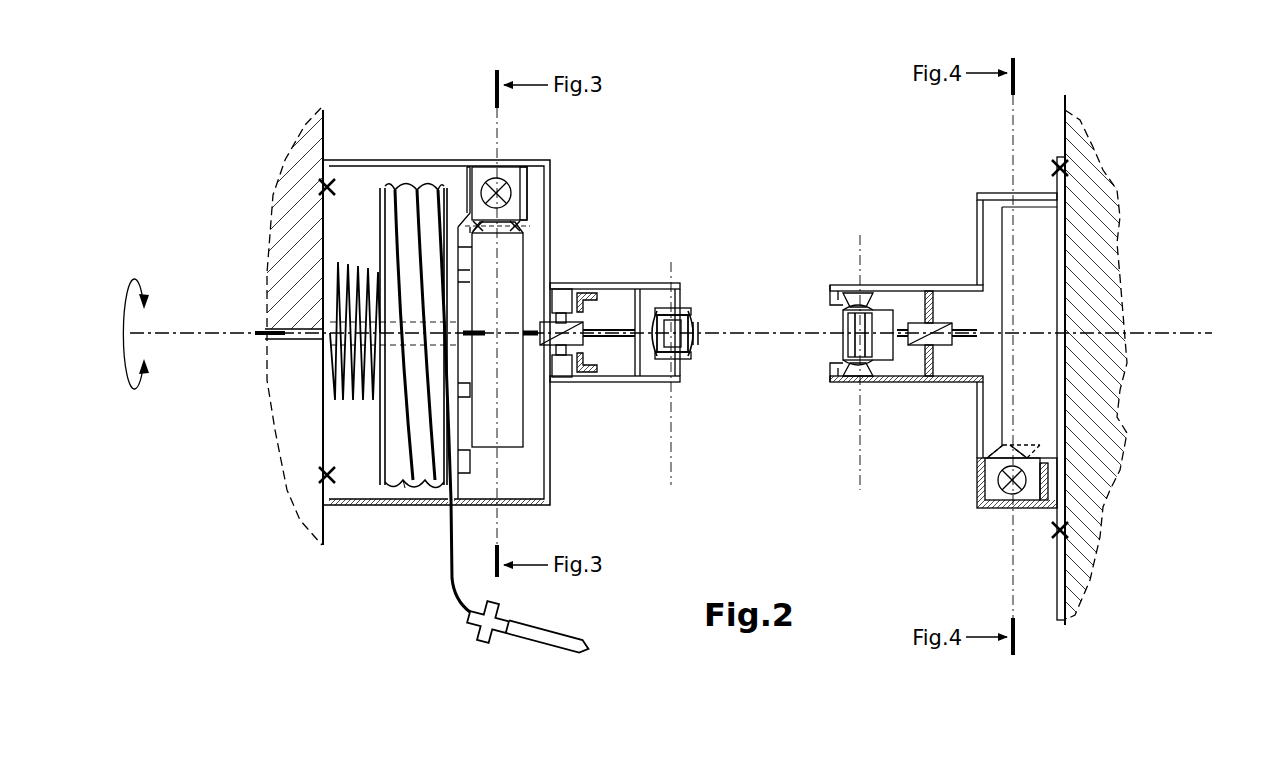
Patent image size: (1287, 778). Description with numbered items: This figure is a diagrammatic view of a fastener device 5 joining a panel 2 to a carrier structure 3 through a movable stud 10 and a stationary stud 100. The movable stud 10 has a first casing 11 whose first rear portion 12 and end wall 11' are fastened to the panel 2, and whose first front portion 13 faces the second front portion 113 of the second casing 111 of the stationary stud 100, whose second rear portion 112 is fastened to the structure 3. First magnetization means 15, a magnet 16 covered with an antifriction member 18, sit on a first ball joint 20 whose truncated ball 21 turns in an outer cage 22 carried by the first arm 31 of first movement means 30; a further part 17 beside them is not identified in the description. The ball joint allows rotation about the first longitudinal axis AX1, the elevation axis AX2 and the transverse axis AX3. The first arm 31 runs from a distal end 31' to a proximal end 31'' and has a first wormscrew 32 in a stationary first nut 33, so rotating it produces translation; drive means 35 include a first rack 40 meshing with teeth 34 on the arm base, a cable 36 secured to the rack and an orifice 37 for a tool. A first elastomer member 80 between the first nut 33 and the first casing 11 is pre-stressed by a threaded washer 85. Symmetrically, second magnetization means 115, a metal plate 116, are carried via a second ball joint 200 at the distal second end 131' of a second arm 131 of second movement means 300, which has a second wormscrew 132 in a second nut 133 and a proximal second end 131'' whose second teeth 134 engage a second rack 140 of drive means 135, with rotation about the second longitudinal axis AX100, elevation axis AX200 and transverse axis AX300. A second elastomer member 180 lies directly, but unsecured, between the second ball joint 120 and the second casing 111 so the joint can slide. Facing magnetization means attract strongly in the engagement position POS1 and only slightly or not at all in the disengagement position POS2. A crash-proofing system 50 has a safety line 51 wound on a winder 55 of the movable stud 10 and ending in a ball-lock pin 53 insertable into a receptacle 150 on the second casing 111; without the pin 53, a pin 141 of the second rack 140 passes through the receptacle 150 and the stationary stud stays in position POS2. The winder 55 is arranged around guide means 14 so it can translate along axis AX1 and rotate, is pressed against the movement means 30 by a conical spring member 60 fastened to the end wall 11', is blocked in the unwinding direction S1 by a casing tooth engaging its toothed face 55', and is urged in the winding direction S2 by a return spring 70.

The panel 2 is at (258, 336).
The carrier structure 3 is at (1108, 418).
The fastener device 5 is at (372, 628).
The movable stud 10 is at (348, 552).
The first casing 11 is at (312, 307).
The end wall 11' is at (253, 393).
The first rear portion 12 is at (370, 160).
The first front portion 13 is at (625, 282).
The guide means 14 is at (415, 345).
The first magnetization means 15 is at (696, 296).
The magnet 16 is at (686, 300).
The gripper end 17 is at (705, 326).
The antifriction member 18 is at (700, 350).
The first ball joint 20 is at (688, 368).
The truncated ball 21 is at (662, 400).
The outer cage 22 is at (645, 383).
The first movement means 30 is at (612, 310).
The first arm 31 is at (630, 410).
The first distal end 31' is at (667, 243).
The first proximal end 31'' is at (442, 489).
The first wormscrew 32 is at (535, 342).
The first nut 33 is at (526, 320).
The teeth 34 is at (518, 230).
The drive means 35 is at (500, 340).
The orifice 37 is at (515, 428).
The cable 36 is at (508, 176).
The first rack 40 is at (472, 166).
The crash-proofing system 50 is at (522, 676).
The safety line 51 is at (454, 588).
The ball-lock pin 53 is at (545, 648).
The winder 55 is at (376, 542).
The toothed face 55' is at (492, 333).
The spring member 60 is at (326, 414).
The return spring 70 is at (408, 325).
The first elastomer member 80 is at (560, 296).
The threaded washer 85 is at (600, 383).
The stationary stud 100 is at (1031, 125).
The second casing 111 is at (975, 442).
The second rear portion 112 is at (1068, 560).
The second front portion 113 is at (950, 383).
The second magnetization means 115 is at (809, 291).
The metal plate 116 is at (848, 325).
The second ball joint 120 is at (858, 470).
The second arm 131 is at (1041, 388).
The second distal end 131' is at (892, 410).
The second proximal end 131'' is at (1161, 274).
The second wormscrew 132 is at (988, 340).
The second nut 133 is at (935, 322).
The second teeth 134 is at (1118, 460).
The drive means 135 is at (1062, 212).
The second rack 140 is at (990, 487).
The pin 141 is at (1008, 512).
The receptacle 150 is at (1015, 508).
The second elastomer member 180 is at (860, 296).
The second ball joint 200 is at (858, 365).
The second movement means 300 is at (912, 305).
The first longitudinal axis AX1 is at (220, 328).
The elevation axis AX2 is at (672, 470).
The transverse axis AX3 is at (672, 262).
The second longitudinal axis AX100 is at (1175, 338).
The elevation axis AX200 is at (858, 490).
The transverse axis AX300 is at (842, 330).
The engagement position POS1 is at (632, 170).
The disengagement position POS2 is at (908, 166).
The unwinding direction of rotation S1 is at (159, 363).
The winding direction of rotation S2 is at (151, 334).